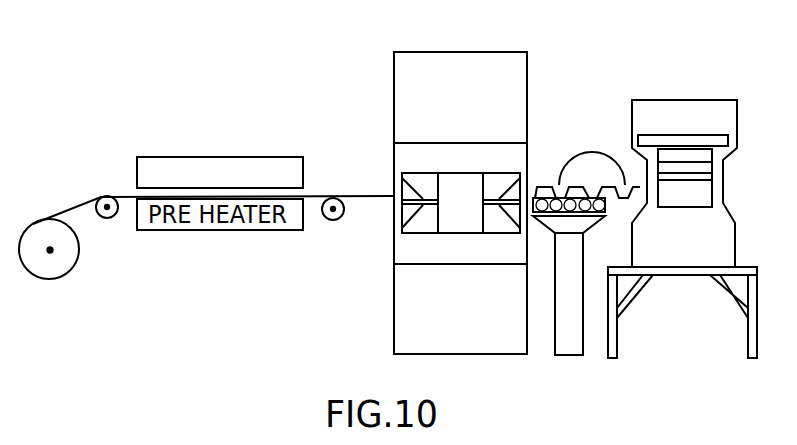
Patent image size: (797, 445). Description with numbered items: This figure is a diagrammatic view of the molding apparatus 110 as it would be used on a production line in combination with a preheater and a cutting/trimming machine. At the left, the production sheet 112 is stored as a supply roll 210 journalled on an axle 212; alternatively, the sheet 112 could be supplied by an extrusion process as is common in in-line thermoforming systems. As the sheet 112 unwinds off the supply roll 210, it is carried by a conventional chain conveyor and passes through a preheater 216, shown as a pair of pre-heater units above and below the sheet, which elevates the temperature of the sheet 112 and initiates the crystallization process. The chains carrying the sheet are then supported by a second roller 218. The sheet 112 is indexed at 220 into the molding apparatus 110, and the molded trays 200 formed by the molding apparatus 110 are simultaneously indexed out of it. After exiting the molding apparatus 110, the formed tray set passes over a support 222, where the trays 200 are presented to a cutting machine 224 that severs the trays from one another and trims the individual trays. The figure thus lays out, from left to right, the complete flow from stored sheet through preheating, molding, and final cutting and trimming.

The molding apparatus 110 is at (480, 62).
The production sheet 112 is at (62, 210).
The molded trays 200 is at (638, 187).
The supply roll 210 is at (48, 272).
The axle 212 is at (53, 253).
The preheater 216 is at (168, 157).
The second roller 218 is at (340, 222).
The indexing point 220 is at (393, 196).
The support 222 is at (570, 345).
The cutting machine 224 is at (697, 105).